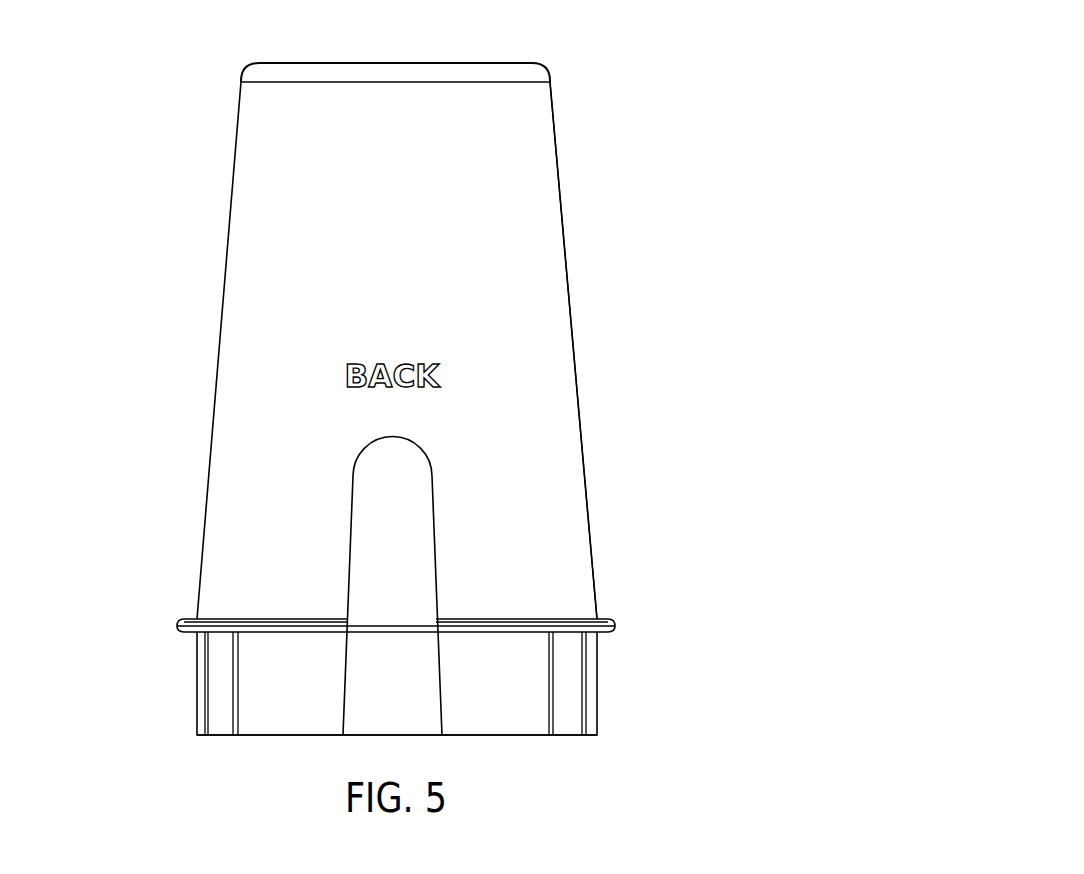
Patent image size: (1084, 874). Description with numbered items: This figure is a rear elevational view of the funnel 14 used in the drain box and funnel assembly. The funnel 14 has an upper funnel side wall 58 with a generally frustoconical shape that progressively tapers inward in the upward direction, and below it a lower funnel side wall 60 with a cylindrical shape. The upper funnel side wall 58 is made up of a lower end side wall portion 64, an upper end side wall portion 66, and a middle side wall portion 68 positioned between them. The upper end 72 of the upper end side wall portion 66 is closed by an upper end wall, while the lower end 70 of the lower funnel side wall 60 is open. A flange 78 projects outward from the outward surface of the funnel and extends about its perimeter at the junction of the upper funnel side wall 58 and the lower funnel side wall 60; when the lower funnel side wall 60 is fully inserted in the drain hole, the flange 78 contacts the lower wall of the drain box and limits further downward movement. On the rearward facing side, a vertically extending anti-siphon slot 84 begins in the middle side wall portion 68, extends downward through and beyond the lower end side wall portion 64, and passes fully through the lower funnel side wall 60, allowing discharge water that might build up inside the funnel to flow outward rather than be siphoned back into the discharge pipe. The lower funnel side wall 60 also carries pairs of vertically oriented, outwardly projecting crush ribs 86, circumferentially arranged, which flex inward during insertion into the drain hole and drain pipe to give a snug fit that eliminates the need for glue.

The funnel 14 is at (735, 181).
The upper funnel side wall 58 is at (575, 365).
The lower funnel side wall 60 is at (598, 660).
The lower end side wall portion 64 is at (560, 432).
The upper end side wall portion 66 is at (515, 122).
The middle side wall portion 68 is at (538, 311).
The lower end 70 is at (303, 735).
The upper end 72 is at (470, 63).
The flange 78 is at (614, 626).
The anti-siphon slot 84 is at (400, 547).
The crush ribs 86 is at (232, 703).